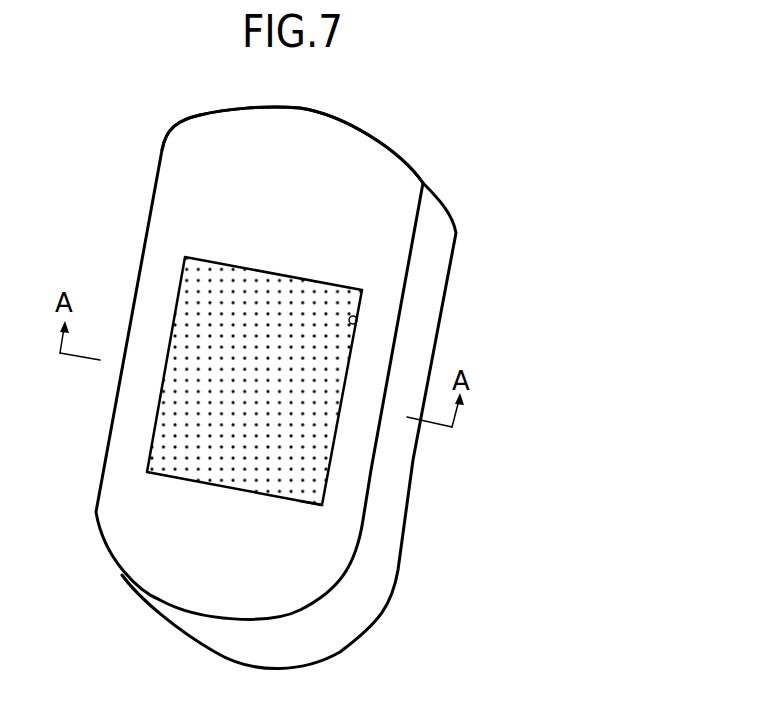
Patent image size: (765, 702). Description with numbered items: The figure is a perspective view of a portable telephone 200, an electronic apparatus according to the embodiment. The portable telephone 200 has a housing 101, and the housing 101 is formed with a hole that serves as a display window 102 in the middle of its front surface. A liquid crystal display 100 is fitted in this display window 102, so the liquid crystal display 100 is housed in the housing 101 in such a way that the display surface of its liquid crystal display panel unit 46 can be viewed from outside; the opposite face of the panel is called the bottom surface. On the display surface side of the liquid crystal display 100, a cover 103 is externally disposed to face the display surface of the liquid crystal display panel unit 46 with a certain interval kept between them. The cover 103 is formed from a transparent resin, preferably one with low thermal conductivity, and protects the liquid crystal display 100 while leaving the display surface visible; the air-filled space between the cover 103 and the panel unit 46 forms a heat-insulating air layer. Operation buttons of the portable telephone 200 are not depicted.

The portable telephone 200 is at (463, 196).
The housing 101 is at (223, 122).
The liquid crystal display 100 is at (172, 291).
The liquid crystal display panel unit 46 is at (167, 432).
The display window 102 is at (355, 327).
The cover 103 is at (313, 487).